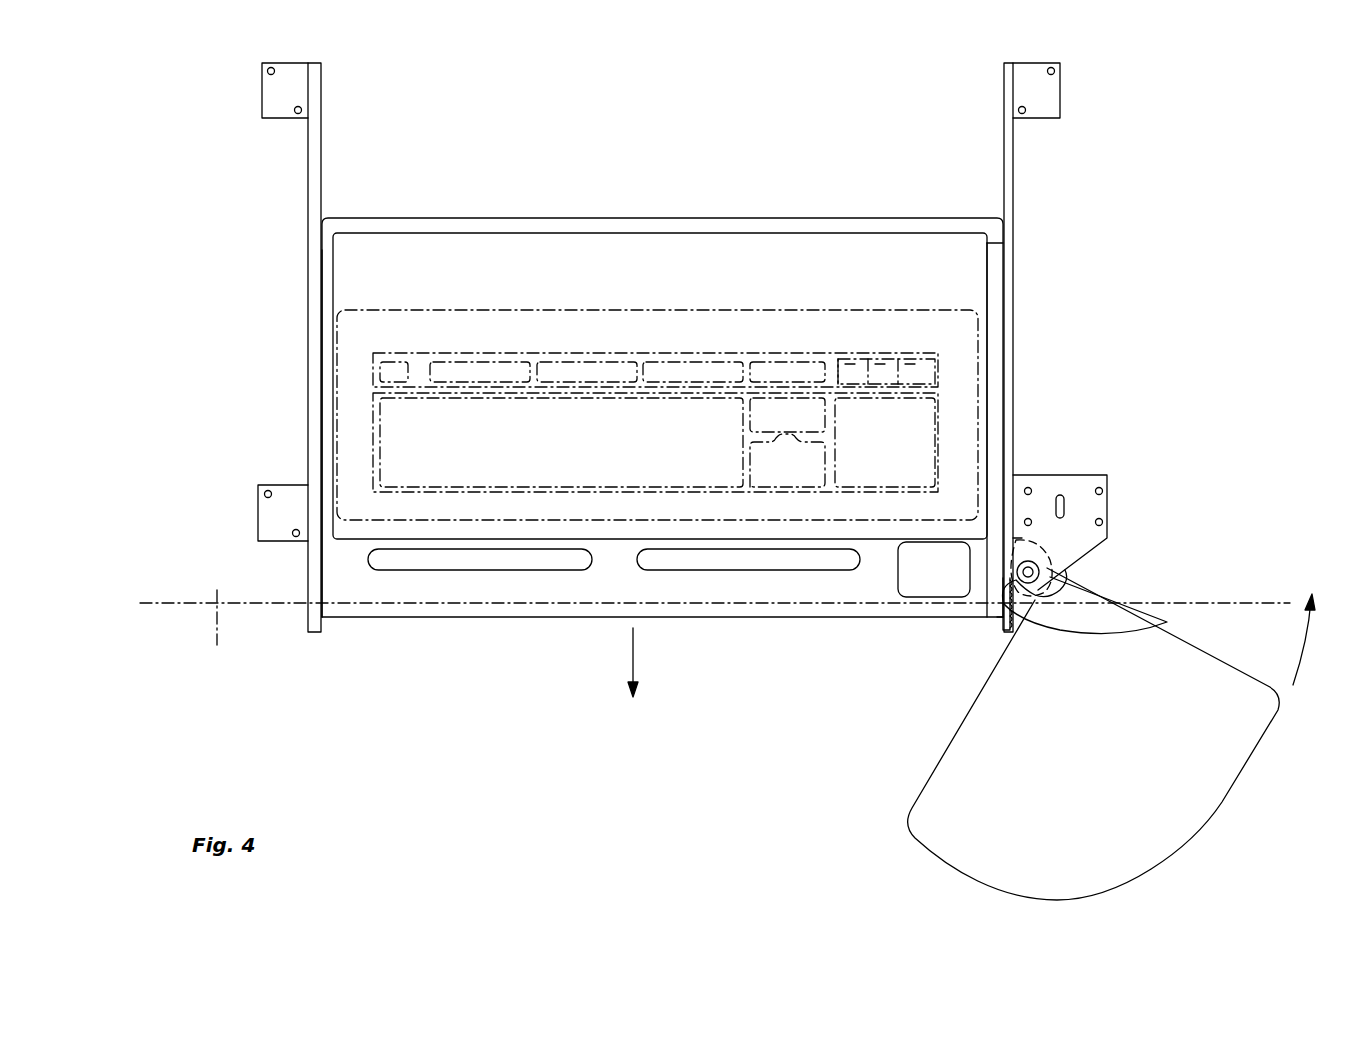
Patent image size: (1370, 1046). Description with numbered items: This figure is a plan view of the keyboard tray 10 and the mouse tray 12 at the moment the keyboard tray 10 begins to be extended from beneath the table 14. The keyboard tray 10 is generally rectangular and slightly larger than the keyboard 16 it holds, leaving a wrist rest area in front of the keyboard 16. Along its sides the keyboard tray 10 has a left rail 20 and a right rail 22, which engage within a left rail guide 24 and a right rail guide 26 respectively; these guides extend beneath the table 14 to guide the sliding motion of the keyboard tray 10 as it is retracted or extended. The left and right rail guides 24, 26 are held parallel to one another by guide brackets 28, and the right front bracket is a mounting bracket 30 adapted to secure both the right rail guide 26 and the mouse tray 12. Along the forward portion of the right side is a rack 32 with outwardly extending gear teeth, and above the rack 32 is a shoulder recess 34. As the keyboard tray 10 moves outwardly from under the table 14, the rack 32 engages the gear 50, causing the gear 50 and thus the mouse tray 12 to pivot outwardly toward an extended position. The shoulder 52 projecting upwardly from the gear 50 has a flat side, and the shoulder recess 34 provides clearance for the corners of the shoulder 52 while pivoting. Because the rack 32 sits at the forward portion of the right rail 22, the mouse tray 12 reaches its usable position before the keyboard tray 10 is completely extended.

The keyboard tray 10 is at (587, 222).
The mouse tray 12 is at (1262, 800).
The table 14 is at (226, 645).
The keyboard 16 is at (767, 330).
The left rail 20 is at (325, 268).
The right rail 22 is at (993, 290).
The left rail guide 24 is at (313, 180).
The right rail guide 26 is at (1010, 195).
The guide brackets 28 is at (278, 97).
The mounting bracket 30 is at (1076, 493).
The rack 32 is at (1118, 628).
The shoulder recess 34 is at (1000, 614).
The gear 50 is at (1052, 590).
The shoulder 52 is at (992, 620).